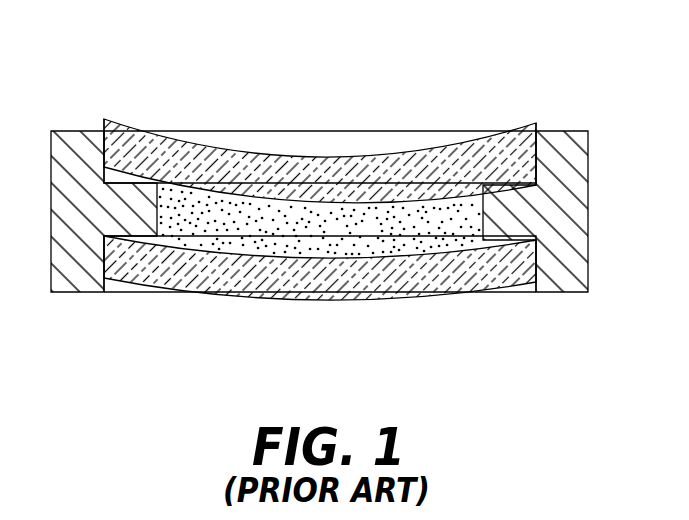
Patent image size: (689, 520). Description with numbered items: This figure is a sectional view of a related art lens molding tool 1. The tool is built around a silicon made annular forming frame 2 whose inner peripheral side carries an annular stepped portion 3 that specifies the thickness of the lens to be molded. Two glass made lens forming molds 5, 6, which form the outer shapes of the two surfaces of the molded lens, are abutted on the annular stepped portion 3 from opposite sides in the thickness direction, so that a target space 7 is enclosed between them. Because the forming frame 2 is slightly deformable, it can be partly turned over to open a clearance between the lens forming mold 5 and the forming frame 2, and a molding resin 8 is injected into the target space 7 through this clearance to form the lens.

The lens molding tool 1 is at (353, 191).
The annular forming frame 2 is at (573, 206).
The annular stepped portion 3 is at (499, 223).
The lens forming mold 5 is at (315, 172).
The lens forming mold 6 is at (333, 283).
The target space 7 is at (265, 228).
The molding resin 8 is at (403, 224).